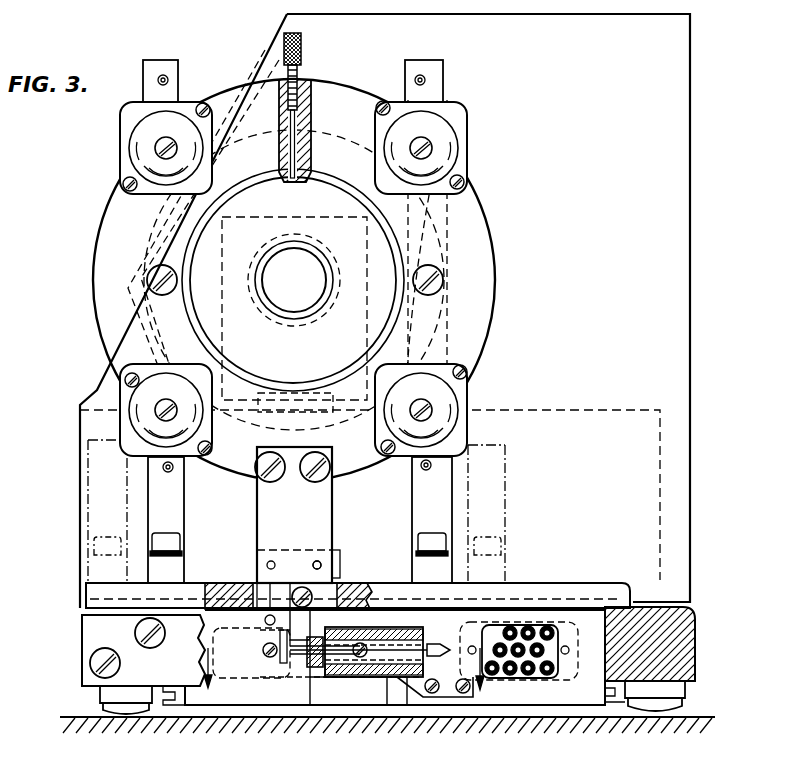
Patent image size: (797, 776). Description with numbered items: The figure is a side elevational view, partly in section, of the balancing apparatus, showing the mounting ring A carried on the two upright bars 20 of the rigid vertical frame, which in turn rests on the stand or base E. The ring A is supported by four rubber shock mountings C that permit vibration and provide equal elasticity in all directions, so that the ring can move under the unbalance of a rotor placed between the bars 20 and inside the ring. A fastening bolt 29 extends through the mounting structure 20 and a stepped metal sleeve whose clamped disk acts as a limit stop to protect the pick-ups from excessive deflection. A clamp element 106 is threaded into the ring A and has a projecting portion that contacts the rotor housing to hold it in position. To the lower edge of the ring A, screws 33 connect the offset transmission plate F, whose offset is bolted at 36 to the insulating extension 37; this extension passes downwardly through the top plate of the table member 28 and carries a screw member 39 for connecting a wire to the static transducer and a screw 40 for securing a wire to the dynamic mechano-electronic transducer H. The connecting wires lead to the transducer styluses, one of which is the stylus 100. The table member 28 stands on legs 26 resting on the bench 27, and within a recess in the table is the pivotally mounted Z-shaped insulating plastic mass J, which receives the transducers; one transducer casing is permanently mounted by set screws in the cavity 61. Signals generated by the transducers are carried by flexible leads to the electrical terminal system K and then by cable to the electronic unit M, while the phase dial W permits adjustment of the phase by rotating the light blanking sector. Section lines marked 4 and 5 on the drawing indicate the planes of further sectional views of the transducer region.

The uprights 20 is at (163, 62).
The clamp element 106 is at (300, 48).
The rubber shock mountings C is at (463, 127).
The mounting ring A is at (473, 250).
The fastening bolt 29 is at (180, 280).
The electronic unit M is at (97, 383).
The section line 4- 4 is at (305, 413).
The screws 33 is at (268, 470).
The transmission plate F is at (315, 508).
The bolt 36 is at (320, 563).
The screw member 39 is at (312, 594).
The stand or base E is at (534, 576).
The insulating plastic mass J is at (387, 630).
The dynamic mechano-electronic transducer H is at (370, 646).
The control valve units 5 is at (395, 656).
The table member 28 is at (683, 630).
The legs 26 is at (112, 692).
The insulating extension 37 is at (262, 618).
The screw 40 is at (222, 679).
The stylus 100 is at (339, 663).
The cavity 61 is at (357, 678).
The bench 27 is at (473, 718).
The electrical terminal system K is at (530, 678).
The phase dial W is at (548, 775).